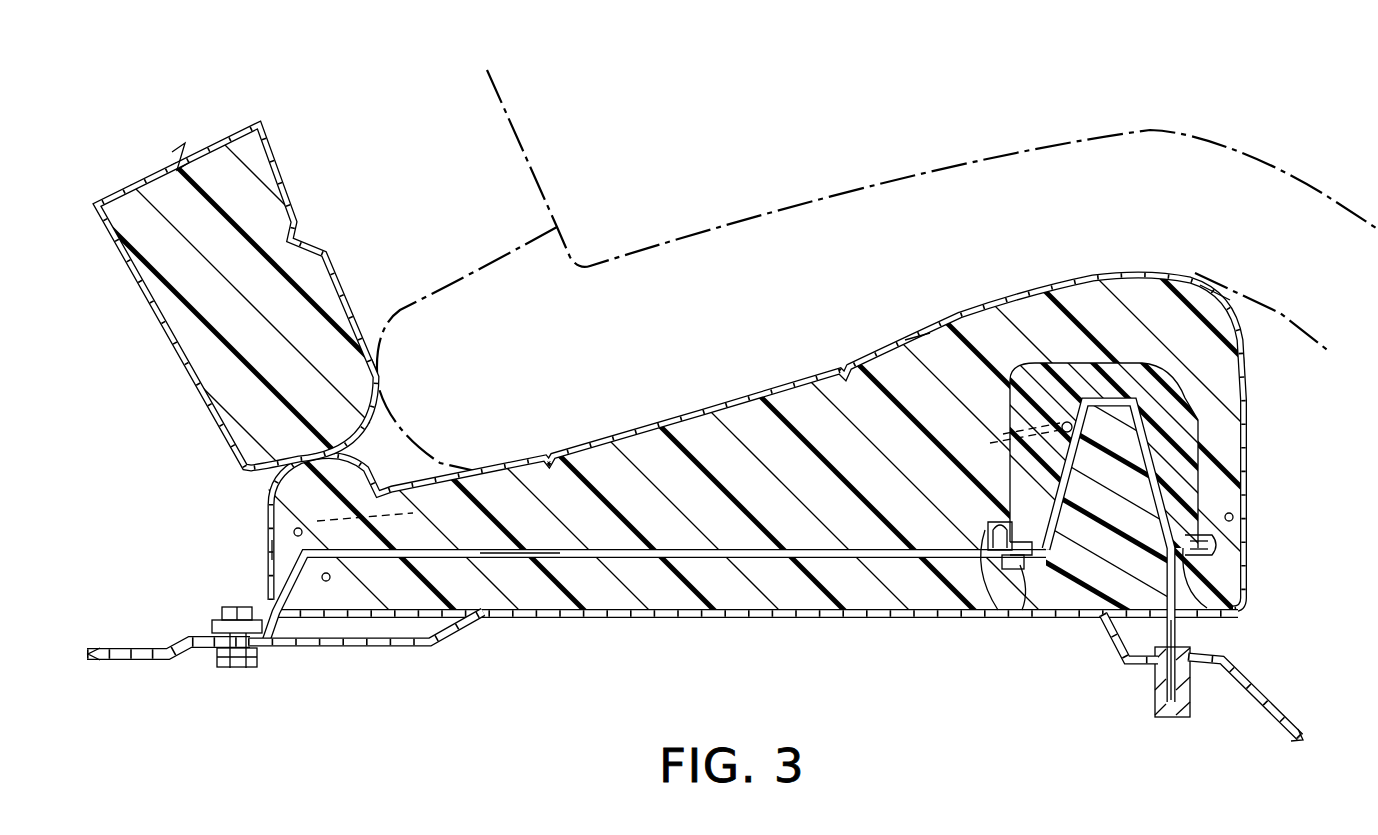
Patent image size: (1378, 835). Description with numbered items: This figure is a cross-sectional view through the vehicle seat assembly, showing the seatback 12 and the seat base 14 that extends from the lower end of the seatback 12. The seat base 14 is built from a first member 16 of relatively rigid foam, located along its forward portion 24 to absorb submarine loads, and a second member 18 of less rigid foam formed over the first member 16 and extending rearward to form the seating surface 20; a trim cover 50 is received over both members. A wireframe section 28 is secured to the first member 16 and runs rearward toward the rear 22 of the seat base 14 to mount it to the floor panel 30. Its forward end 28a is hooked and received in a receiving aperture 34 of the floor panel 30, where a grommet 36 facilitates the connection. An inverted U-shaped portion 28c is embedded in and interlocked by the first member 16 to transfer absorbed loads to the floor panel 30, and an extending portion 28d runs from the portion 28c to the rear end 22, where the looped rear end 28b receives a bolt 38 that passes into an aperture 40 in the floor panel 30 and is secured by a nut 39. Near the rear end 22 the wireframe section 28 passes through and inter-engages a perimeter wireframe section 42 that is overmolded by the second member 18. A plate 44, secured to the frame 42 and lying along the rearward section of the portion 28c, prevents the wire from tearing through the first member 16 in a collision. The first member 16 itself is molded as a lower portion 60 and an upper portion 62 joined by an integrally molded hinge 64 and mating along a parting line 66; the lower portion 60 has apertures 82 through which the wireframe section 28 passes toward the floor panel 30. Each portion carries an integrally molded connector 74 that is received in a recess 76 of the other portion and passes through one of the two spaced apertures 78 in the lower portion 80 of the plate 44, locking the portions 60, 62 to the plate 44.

The seatback 12 is at (297, 188).
The seat base 14 is at (778, 380).
The first member 16 is at (1188, 415).
The second member 18 is at (652, 440).
The seating surface 20 is at (799, 438).
The rear end of seat base 22 is at (266, 521).
The forward portion of seat base 24 is at (799, 438).
The wireframe section 28 is at (753, 561).
The forward end of wireframe section 28a is at (1176, 680).
The rear end of wireframe section 28b is at (255, 630).
The inverted U-shaped portion 28c is at (1121, 398).
The extending portion 28d is at (517, 560).
The floor panel 30 is at (644, 620).
The receiving aperture 34 is at (1200, 666).
The grommet 36 is at (1157, 686).
The bolt 38 is at (220, 608).
The nut 39 is at (218, 660).
The aperture 40 is at (237, 668).
The perimeter wireframe section 42 is at (322, 577).
The plate member 44 is at (1038, 486).
The trim cover 50 is at (925, 332).
The lower portion 60 is at (1083, 590).
The upper portion 62 is at (1160, 389).
The hinge 64 is at (1218, 556).
The parting line 66 is at (1210, 606).
The integrally molded connector 74 is at (1002, 588).
The recess 76 is at (992, 528).
The plate aperture 78 is at (988, 560).
The lower portion of plate 80 is at (1028, 575).
The aperture of lower portion 82 is at (1150, 620).